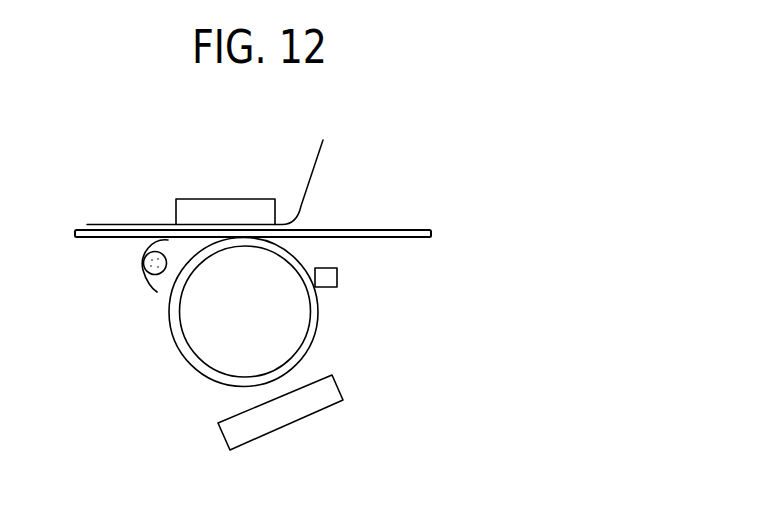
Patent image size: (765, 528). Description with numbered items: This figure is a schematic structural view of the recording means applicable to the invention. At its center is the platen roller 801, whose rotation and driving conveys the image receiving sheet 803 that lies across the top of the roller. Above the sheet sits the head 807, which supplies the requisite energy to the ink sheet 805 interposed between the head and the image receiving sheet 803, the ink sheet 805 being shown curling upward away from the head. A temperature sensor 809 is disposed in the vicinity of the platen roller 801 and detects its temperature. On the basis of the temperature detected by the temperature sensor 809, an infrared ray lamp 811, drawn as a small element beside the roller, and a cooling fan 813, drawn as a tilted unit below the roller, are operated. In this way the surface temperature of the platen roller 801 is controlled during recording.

The platen roller 801 is at (190, 361).
The image receiving sheet 803 is at (326, 229).
The ink sheet 805 is at (313, 163).
The head 807 is at (203, 198).
The temperature sensor 809 is at (337, 278).
The infrared ray lamp 811 is at (143, 265).
The cooling fan 813 is at (340, 387).